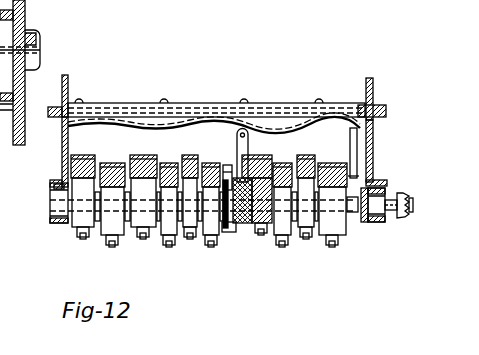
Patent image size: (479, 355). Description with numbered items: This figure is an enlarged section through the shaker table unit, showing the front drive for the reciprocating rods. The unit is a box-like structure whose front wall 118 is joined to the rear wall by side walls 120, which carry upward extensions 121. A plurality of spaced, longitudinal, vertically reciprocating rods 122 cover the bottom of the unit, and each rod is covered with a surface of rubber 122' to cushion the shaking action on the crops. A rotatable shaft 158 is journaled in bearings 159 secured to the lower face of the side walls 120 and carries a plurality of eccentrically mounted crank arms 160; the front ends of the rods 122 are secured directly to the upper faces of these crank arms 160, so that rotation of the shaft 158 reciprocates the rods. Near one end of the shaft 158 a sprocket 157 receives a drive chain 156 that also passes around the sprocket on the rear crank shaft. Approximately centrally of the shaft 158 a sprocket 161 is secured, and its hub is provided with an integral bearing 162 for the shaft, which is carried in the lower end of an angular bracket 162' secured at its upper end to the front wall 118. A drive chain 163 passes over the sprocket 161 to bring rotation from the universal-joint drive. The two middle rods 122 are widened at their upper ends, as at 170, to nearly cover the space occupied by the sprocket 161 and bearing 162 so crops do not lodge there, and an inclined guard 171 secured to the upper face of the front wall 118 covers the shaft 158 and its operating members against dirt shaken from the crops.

The front wall 118 is at (335, 140).
The side walls 120 is at (63, 143).
The upward extensions 121 is at (68, 83).
The rods 122 is at (190, 161).
The surface of rubber 122' is at (120, 162).
The drive chain 156 is at (402, 195).
The sprocket 157 is at (400, 215).
The rotatable shaft 158 is at (364, 222).
The bearings 159 is at (50, 193).
The crank arms 160 is at (212, 223).
The sprocket 161 is at (232, 224).
The bearing 162 is at (253, 227).
The angular bracket 162' is at (237, 134).
The drive chain 163 is at (228, 228).
The widened upper ends 170 is at (225, 165).
The inclined guard 171 is at (160, 104).